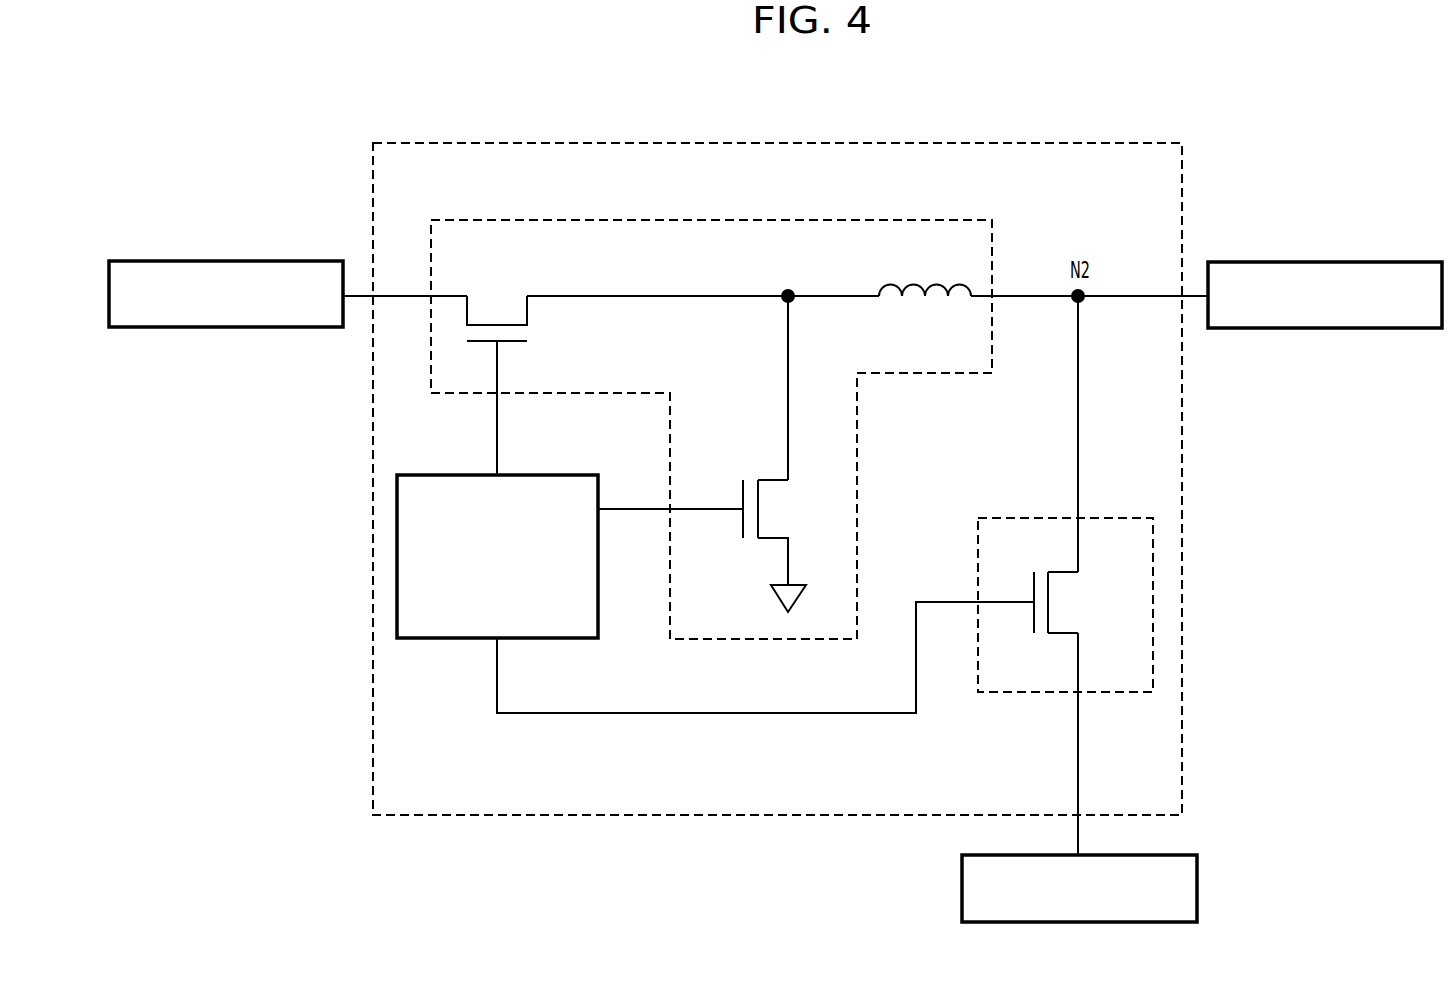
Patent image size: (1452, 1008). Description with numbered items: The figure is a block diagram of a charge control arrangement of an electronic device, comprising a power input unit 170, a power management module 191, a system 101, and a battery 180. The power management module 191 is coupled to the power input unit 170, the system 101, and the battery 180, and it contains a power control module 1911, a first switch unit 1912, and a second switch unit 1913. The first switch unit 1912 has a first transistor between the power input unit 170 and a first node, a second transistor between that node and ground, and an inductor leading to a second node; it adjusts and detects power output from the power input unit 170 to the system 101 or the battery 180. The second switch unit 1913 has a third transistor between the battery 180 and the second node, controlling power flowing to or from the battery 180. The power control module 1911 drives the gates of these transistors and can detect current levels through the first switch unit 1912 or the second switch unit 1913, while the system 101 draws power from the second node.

The system 101 is at (1327, 262).
The power input unit 170 is at (228, 261).
The battery 180 is at (1197, 885).
The power management module 191 is at (373, 720).
The power control module 1911 is at (562, 475).
The first switch unit 1912 is at (712, 220).
The second switch unit 1913 is at (1020, 518).